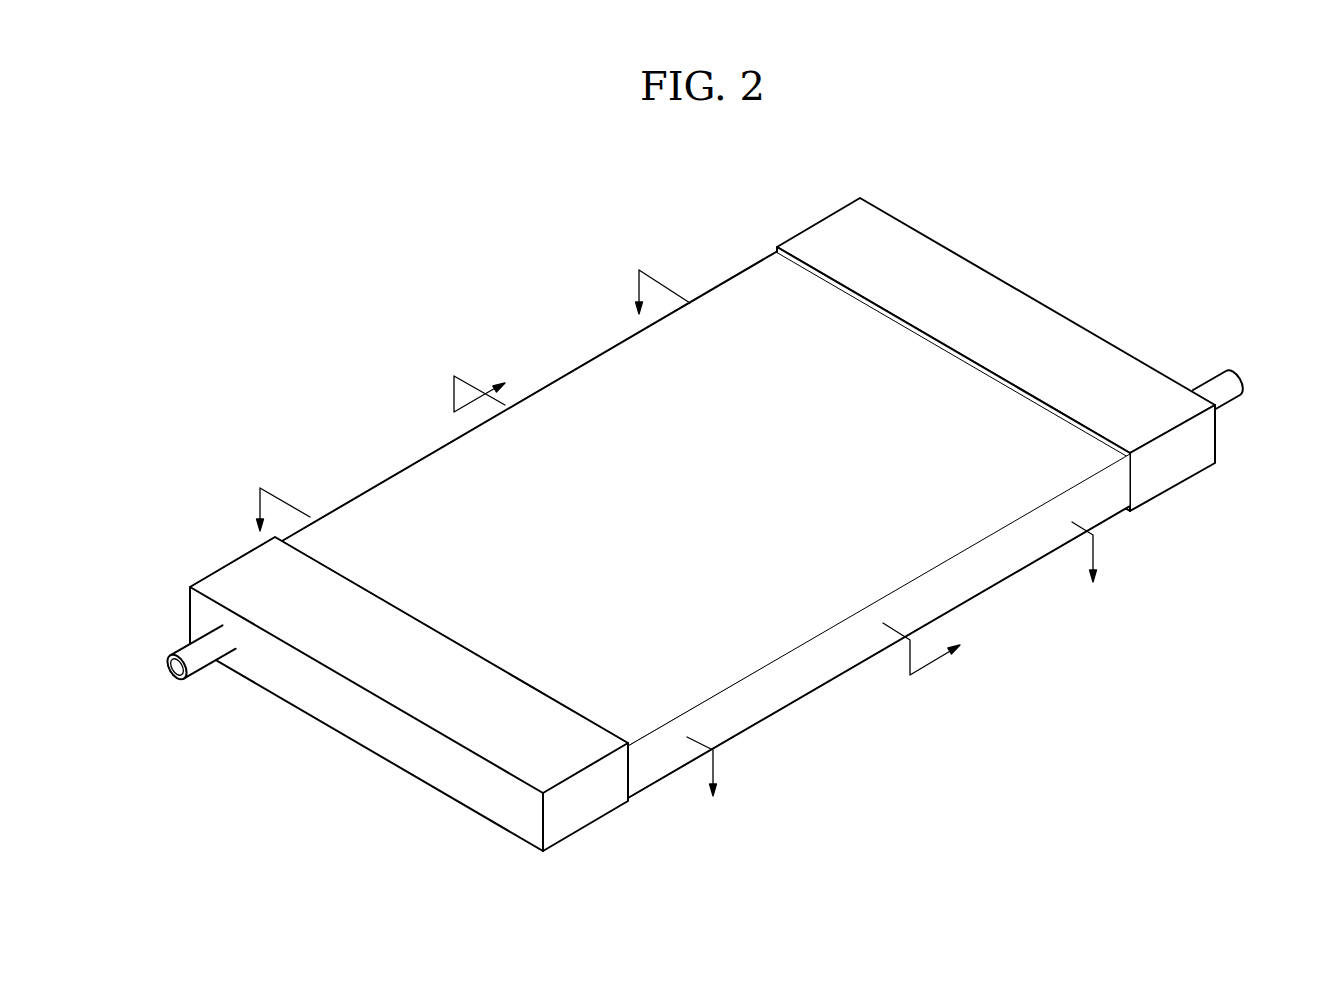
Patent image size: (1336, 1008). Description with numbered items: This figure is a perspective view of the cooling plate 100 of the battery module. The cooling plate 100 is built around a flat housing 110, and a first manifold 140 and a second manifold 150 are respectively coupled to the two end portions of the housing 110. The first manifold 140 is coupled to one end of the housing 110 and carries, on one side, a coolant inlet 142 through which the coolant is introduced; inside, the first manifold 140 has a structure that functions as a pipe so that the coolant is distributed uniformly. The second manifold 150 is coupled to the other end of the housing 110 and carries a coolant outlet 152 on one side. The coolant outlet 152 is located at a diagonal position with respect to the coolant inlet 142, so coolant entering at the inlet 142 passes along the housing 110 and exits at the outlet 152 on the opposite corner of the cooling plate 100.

The cooling plate 100 is at (700, 499).
The housing 110 is at (428, 465).
The first manifold 140 is at (232, 573).
The coolant inlet 142 is at (185, 650).
The second manifold 150 is at (823, 228).
The coolant outlet 152 is at (1222, 401).